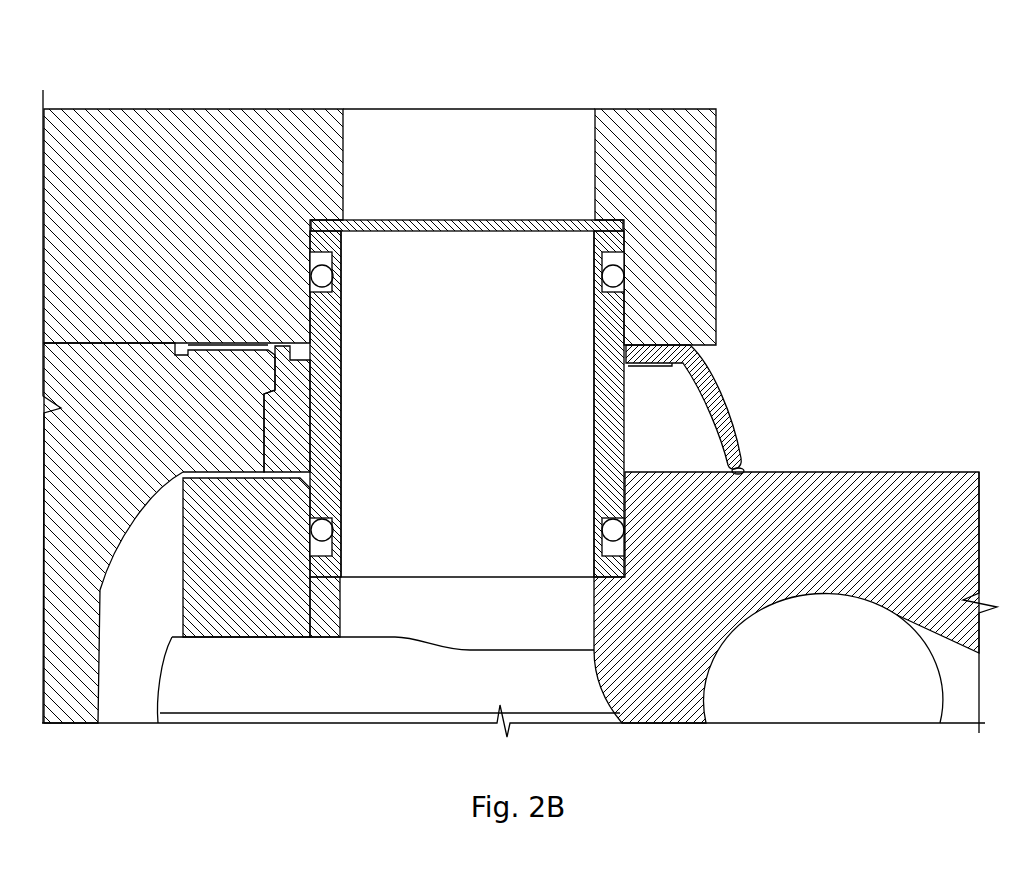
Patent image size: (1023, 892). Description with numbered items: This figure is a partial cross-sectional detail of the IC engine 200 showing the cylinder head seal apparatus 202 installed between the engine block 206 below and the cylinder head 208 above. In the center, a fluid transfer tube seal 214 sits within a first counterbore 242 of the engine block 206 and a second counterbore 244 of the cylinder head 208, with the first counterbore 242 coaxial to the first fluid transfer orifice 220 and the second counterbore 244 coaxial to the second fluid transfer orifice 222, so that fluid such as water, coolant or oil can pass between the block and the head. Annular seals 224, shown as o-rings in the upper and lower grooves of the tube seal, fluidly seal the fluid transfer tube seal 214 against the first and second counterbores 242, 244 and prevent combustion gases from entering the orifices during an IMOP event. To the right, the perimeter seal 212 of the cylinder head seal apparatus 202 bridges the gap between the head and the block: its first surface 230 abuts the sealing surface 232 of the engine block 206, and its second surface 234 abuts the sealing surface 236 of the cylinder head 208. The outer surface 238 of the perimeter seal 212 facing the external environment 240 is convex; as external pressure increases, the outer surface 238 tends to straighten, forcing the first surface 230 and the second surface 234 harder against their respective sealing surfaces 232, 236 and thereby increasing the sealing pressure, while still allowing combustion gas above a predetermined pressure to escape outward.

The IC engine 200 is at (867, 76).
The cylinder head seal apparatus 202 is at (615, 318).
The engine block 206 is at (948, 490).
The cylinder head 208 is at (708, 130).
The perimeter seal 212 is at (724, 400).
The fluid transfer tube seal 214 is at (449, 417).
The first fluid transfer orifice 220 is at (449, 624).
The second fluid transfer orifice 222 is at (447, 144).
The annular seal 224 is at (623, 275).
The first surface 230 is at (742, 471).
The sealing surface 232 is at (880, 474).
The second surface 234 is at (678, 344).
The sealing surface 236 is at (712, 350).
The outer surface 238 is at (738, 432).
The external environment 240 is at (865, 252).
The first counterbore 242 is at (627, 575).
The second counterbore 244 is at (612, 218).